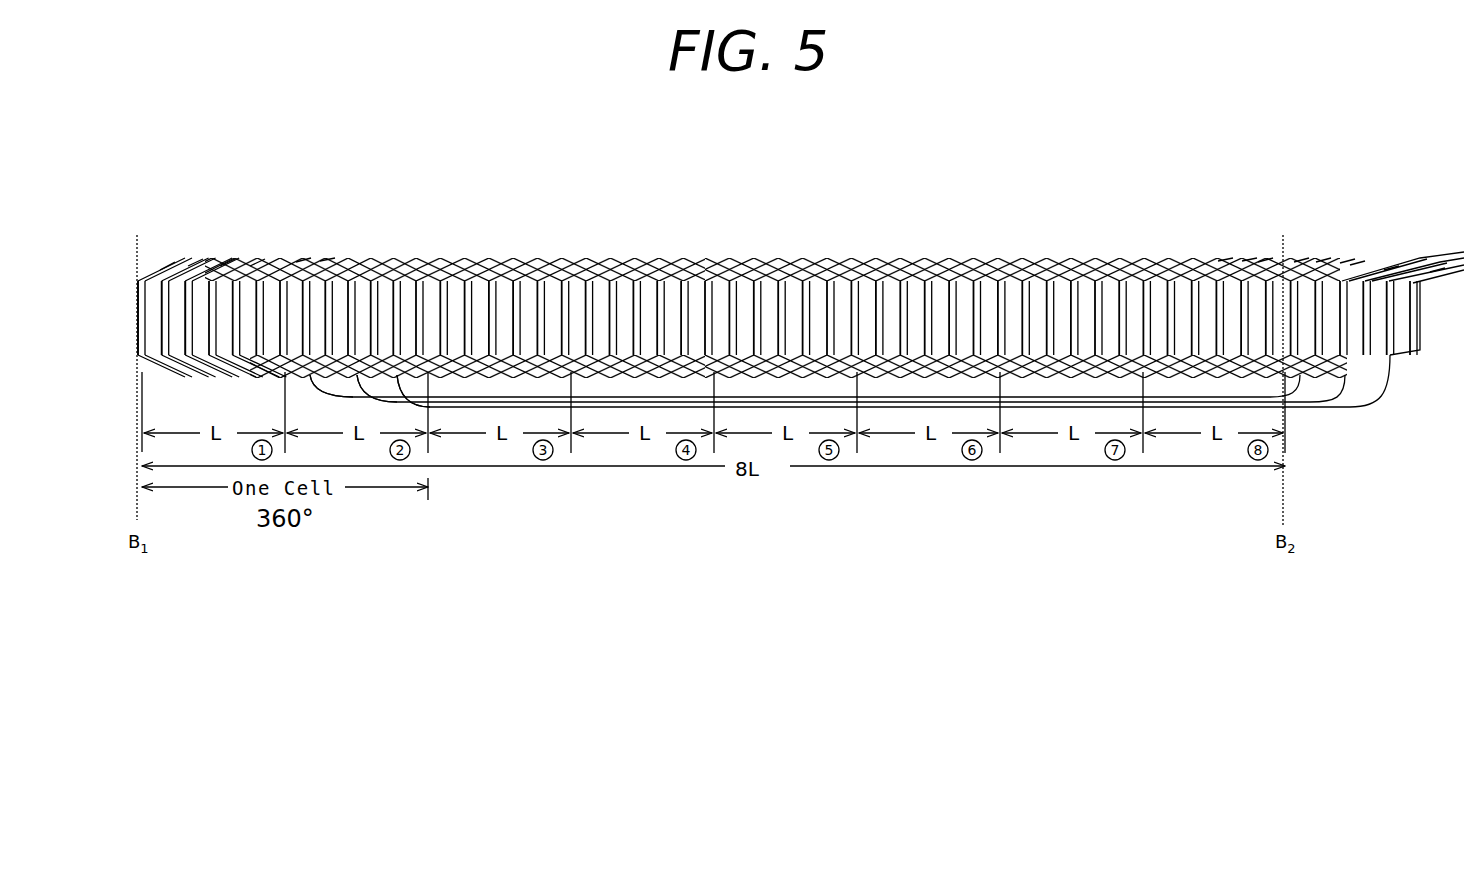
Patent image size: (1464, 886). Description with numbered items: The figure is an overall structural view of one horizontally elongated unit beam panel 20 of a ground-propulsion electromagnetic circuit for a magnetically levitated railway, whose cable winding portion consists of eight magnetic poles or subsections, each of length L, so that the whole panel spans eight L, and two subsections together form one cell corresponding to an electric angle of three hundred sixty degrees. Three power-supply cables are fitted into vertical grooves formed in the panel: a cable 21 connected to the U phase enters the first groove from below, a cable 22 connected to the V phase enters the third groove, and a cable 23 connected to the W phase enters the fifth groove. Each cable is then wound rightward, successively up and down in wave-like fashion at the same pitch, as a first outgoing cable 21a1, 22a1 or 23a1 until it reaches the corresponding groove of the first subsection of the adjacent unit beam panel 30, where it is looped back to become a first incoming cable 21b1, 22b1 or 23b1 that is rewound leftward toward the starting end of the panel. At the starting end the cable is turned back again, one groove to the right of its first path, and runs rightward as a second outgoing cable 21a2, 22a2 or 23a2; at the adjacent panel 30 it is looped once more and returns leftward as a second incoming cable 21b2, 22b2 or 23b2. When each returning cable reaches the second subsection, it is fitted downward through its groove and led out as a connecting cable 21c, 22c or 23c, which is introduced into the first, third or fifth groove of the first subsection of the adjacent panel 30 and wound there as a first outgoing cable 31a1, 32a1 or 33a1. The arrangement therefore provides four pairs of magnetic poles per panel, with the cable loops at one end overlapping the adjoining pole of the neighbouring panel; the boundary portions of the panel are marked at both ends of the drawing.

The unit beam panel 20 is at (822, 552).
The adjacent unit beam panel 30 is at (1322, 540).
The cable 21 is at (140, 378).
The cable 22 is at (187, 358).
The cable 23 is at (235, 358).
The first outgoing cable 21a1 is at (163, 265).
The second outgoing cable 21a2 is at (192, 260).
The first outgoing cable 22a1 is at (223, 263).
The second outgoing cable 22a2 is at (253, 263).
The first outgoing cable 23a1 is at (300, 257).
The second outgoing cable 23a2 is at (323, 256).
The first incoming cable 21b1 is at (1223, 256).
The second incoming cable 21b2 is at (1247, 257).
The first incoming cable 22b1 is at (1263, 258).
The second incoming cable 22b2 is at (1300, 260).
The first incoming cable 23b1 is at (1323, 260).
The second incoming cable 23b2 is at (1347, 260).
The first outgoing cable 31a1 is at (1355, 262).
The first outgoing cable 32a1 is at (1390, 267).
The first outgoing cable 33a1 is at (1437, 267).
The connecting cable 21c is at (307, 378).
The connecting cable 22c is at (358, 377).
The connecting cable 23c is at (395, 377).